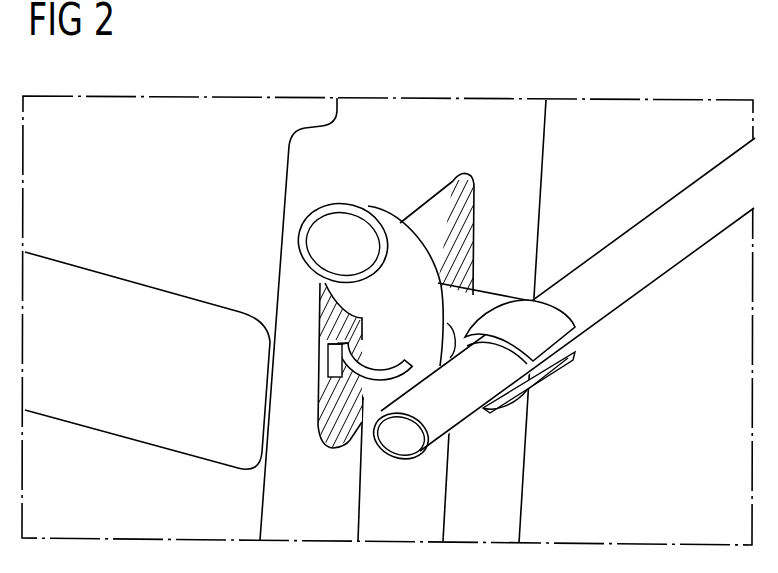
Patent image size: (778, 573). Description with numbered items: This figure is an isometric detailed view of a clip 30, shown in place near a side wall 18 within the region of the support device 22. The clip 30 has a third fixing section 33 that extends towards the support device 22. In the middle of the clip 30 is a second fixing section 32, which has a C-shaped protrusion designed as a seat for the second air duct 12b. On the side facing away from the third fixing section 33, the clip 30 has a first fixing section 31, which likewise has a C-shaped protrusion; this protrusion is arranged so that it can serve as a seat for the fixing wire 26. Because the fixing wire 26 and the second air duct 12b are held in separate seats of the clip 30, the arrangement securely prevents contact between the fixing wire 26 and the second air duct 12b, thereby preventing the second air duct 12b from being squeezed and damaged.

The support device 22 is at (636, 116).
The side wall 18 is at (526, 189).
The fixing wire 26 is at (630, 288).
The clip 30 is at (459, 279).
The first fixing section 31 is at (522, 314).
The second fixing section 32 is at (355, 383).
The third fixing section 33 is at (350, 338).
The second air duct 12b is at (365, 515).